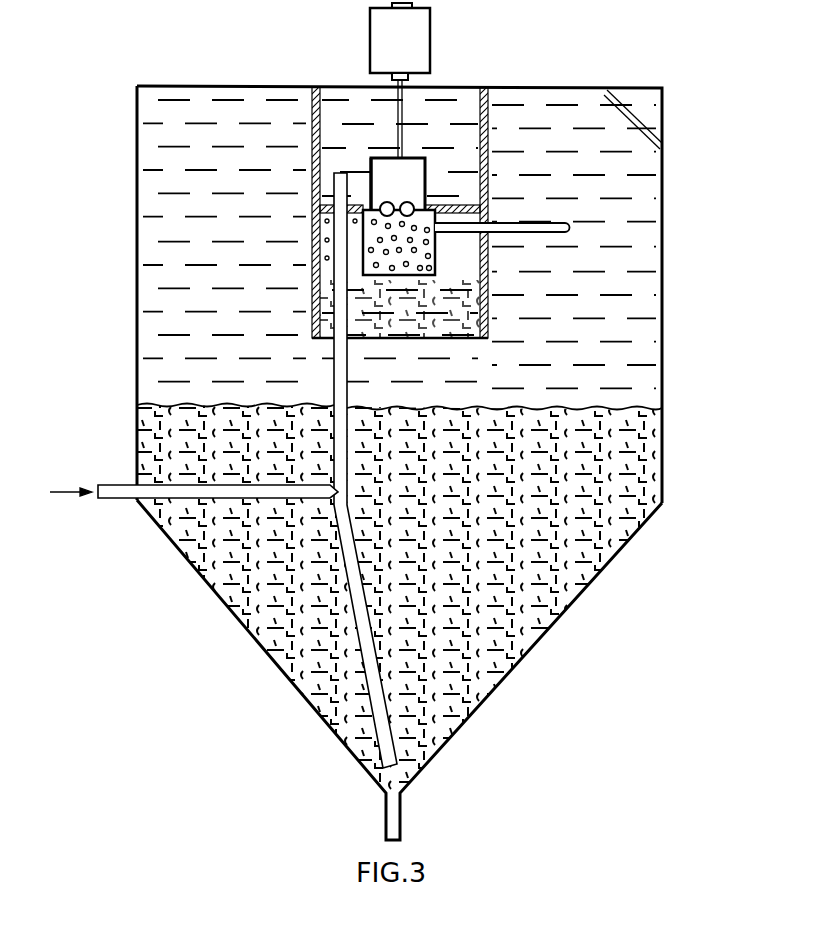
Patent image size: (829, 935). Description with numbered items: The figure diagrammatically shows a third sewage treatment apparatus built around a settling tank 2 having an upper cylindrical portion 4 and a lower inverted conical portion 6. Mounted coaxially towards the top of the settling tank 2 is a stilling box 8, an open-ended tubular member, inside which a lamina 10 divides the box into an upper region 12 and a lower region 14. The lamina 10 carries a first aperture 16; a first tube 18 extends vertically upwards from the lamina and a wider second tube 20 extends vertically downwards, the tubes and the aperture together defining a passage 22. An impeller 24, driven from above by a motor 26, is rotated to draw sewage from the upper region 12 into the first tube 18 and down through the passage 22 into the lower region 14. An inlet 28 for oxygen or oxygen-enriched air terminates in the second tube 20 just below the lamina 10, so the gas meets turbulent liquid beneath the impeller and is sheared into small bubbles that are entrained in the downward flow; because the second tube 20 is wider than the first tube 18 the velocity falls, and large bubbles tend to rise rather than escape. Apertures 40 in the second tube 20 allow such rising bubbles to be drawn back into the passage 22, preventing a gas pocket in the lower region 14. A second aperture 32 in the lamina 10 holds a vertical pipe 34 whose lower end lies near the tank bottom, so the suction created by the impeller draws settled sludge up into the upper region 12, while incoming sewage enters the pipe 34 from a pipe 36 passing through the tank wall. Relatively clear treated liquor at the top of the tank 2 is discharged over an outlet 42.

The settling tank 2 is at (666, 393).
The upper cylindrical portion 4 is at (136, 334).
The lower inverted conical portion 6 is at (222, 608).
The stilling box 8 is at (495, 145).
The lamina 10 is at (479, 198).
The upper region 12 is at (343, 110).
The lower region 14 is at (463, 320).
The first aperture 16 is at (372, 197).
The first tube 18 is at (425, 177).
The second tube 20 is at (437, 260).
The passage 22 is at (388, 256).
The impeller 24 is at (423, 201).
The motor 26 is at (420, 56).
The inlet 28 is at (565, 224).
The second aperture 32 is at (333, 200).
The vertical pipe 34 is at (338, 382).
The pipe 36 is at (115, 500).
The apertures 40 is at (354, 232).
The outlet 42 is at (632, 108).